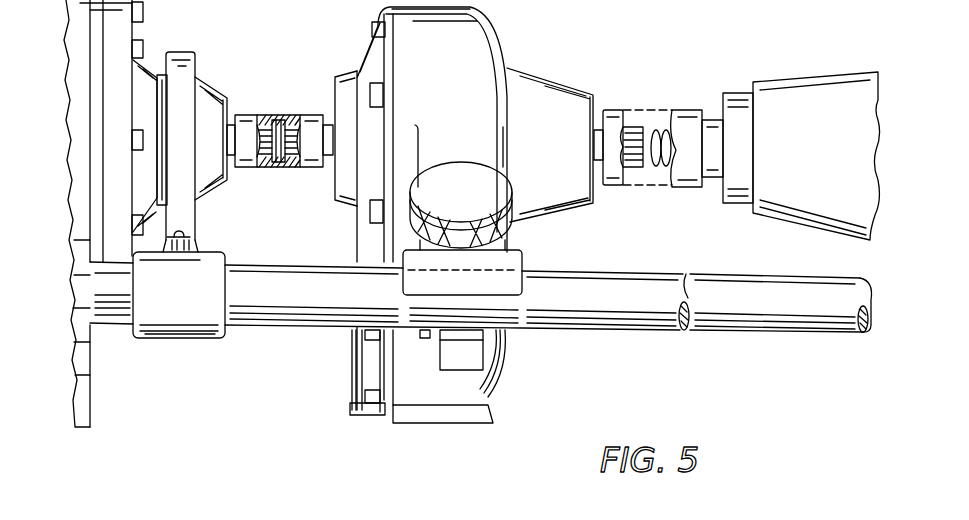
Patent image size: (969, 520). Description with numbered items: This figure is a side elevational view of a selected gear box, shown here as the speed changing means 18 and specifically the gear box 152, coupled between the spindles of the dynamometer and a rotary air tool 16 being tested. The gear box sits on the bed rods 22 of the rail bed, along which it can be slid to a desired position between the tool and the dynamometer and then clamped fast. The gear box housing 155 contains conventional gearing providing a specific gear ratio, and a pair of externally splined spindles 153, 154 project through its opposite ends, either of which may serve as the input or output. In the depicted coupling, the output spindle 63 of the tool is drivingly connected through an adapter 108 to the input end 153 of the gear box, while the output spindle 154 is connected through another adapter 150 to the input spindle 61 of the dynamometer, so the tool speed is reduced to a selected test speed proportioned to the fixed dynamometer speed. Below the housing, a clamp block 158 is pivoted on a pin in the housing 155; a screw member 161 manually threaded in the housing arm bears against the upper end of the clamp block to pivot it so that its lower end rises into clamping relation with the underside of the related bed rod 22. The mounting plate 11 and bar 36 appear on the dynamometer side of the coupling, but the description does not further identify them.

The mounting plate 11 is at (142, 32).
The rotary air tool 16 is at (793, 100).
The speed changing means 18 is at (504, 55).
The bed rods 22 is at (700, 331).
The flange bar 36 is at (188, 217).
The input spindle of the dynamometer 61 is at (267, 133).
The output spindle of the tool 63 is at (662, 133).
The adapter 108 is at (685, 188).
The adapter 150 is at (298, 170).
The gear box 152 is at (458, 27).
The externally splined spindle (input end) 153 is at (632, 127).
The externally splined spindle (output spindle) 154 is at (290, 133).
The gear box housing 155 is at (497, 344).
The clamp block 158 is at (472, 363).
The screw member 161 is at (494, 210).